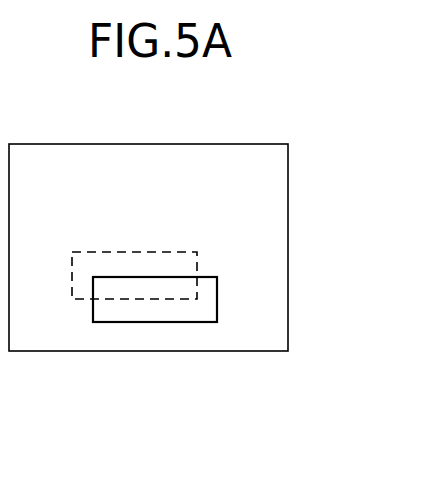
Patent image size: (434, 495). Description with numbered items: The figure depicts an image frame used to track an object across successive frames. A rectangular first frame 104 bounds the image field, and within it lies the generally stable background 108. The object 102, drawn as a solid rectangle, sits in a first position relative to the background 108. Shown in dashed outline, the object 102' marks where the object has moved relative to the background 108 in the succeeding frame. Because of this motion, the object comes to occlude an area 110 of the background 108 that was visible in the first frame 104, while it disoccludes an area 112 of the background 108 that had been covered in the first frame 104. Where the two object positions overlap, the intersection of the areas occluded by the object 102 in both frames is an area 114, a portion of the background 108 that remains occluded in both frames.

The first frame 104 is at (194, 143).
The background 108 is at (88, 192).
The occluded area 110 is at (88, 262).
The moved object 102' is at (139, 250).
The object 102 is at (213, 299).
The intersection area 114 is at (127, 290).
The disoccluded area 112 is at (170, 312).